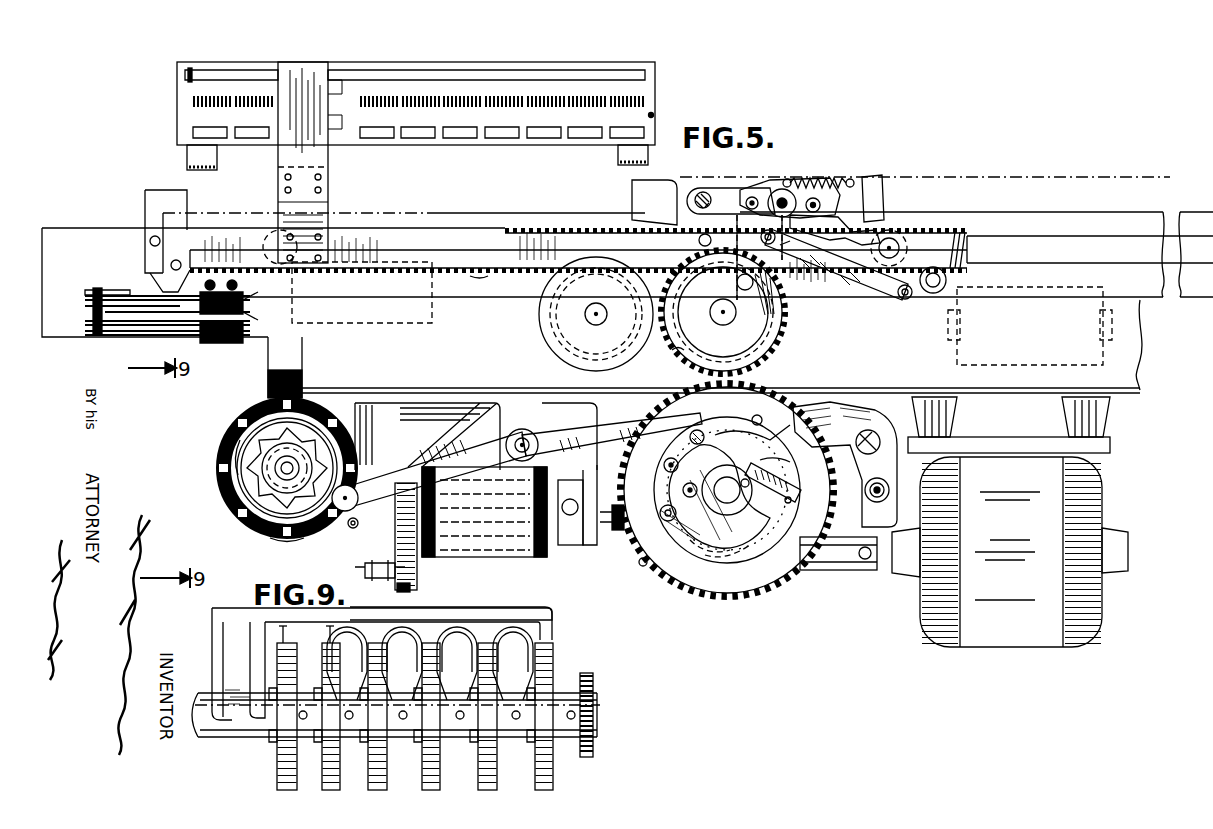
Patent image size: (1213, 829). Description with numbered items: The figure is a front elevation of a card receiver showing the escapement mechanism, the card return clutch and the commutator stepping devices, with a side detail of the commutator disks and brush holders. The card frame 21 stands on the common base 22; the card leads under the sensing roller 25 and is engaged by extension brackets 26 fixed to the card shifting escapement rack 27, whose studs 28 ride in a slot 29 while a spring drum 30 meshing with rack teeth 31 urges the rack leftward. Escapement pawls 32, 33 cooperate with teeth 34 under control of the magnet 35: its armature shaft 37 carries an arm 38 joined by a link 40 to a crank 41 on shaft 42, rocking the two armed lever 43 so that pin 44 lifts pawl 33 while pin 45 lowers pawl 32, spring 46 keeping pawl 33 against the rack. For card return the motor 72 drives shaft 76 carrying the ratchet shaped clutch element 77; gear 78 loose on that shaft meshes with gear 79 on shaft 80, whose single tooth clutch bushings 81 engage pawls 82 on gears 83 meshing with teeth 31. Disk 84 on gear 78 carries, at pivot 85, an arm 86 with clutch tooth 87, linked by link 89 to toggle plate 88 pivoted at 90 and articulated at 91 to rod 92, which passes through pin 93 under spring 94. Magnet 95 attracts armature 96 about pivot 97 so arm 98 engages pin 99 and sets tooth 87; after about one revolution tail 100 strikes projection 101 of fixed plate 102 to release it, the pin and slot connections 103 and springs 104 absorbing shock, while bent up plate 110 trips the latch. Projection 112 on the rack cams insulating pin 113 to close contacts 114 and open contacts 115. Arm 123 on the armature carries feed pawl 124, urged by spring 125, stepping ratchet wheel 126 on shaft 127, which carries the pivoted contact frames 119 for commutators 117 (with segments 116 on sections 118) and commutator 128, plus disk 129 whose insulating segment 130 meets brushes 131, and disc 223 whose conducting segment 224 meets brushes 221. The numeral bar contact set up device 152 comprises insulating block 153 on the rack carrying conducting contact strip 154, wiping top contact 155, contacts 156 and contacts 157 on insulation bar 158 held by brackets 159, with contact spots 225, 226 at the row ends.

In FIG. 5, the card frame 21 is at (1120, 370).
In FIG. 9, the card frame 21 is at (225, 615).
In FIG. 5, the base 22 is at (462, 390).
In FIG. 5, the sensing roller 25 is at (745, 183).
In FIG. 5, the extension brackets 26 is at (160, 198).
In FIG. 5, the card shifting escapement rack 27 is at (578, 251).
In FIG. 5, the studs 28 is at (940, 232).
In FIG. 5, the slot 29 is at (1090, 236).
In FIG. 5, the spring drum 30 is at (570, 335).
In FIG. 5, the rack teeth 31 is at (478, 277).
In FIG. 5, the escapement pawl 32 is at (725, 195).
In FIG. 5, the escapement pawl 33 is at (835, 215).
In FIG. 5, the teeth 34 is at (900, 240).
In FIG. 5, the magnet 35 is at (990, 365).
In FIG. 5, the shaft 37 is at (940, 290).
In FIG. 5, the arm 38 is at (905, 300).
In FIG. 5, the link 40 is at (860, 285).
In FIG. 5, the crank 41 is at (793, 240).
In FIG. 5, the shaft 42 is at (792, 193).
In FIG. 5, the two armed lever 43 is at (800, 182).
In FIG. 5, the pin 44 is at (876, 185).
In FIG. 5, the pin 45 is at (758, 192).
In FIG. 5, the spring 46 is at (818, 200).
In FIG. 5, the motor 72 is at (964, 522).
In FIG. 5, the shaft 76 is at (752, 540).
In FIG. 5, the ratchet shaped clutch element 77 is at (752, 512).
In FIG. 5, the gear 78 is at (752, 595).
In FIG. 5, the gear 79 is at (678, 350).
In FIG. 5, the shaft 80 is at (760, 365).
In FIG. 5, the single tooth clutch bushings 81 is at (770, 348).
In FIG. 5, the pawls 82 is at (738, 283).
In FIG. 5, the gears 83 is at (768, 340).
In FIG. 5, the disk 84 is at (775, 545).
In FIG. 5, the pivot 85 is at (788, 455).
In FIG. 5, the arm 86 is at (664, 460).
In FIG. 5, the clutch tooth 87 is at (683, 486).
In FIG. 5, the toggle plate 88 is at (690, 560).
In FIG. 5, the link 89 is at (660, 510).
In FIG. 5, the pivot 90 is at (640, 565).
In FIG. 5, the articulation 91 is at (795, 470).
In FIG. 5, the rod 92 is at (790, 504).
In FIG. 5, the pin 93 is at (800, 492).
In FIG. 5, the spring 94 is at (752, 490).
In FIG. 5, the magnet 95 is at (484, 512).
In FIG. 5, the armature 96 is at (573, 535).
In FIG. 5, the pivot 97 is at (513, 438).
In FIG. 5, the arm 98 is at (612, 434).
In FIG. 5, the pin 99 is at (698, 430).
In FIG. 5, the tail 100 is at (766, 416).
In FIG. 5, the projection 101 is at (845, 464).
In FIG. 5, the fixed plate 102 is at (890, 482).
In FIG. 5, the pin and slot connections 103 is at (735, 580).
In FIG. 5, the springs 104 is at (705, 565).
In FIG. 5, the bent up plate 110 is at (622, 540).
In FIG. 5, the projection 112 is at (162, 285).
In FIG. 5, the insulating pin 113 is at (97, 290).
In FIG. 5, the contacts 114 is at (90, 300).
In FIG. 5, the contacts 115 is at (108, 333).
In FIG. 5, the contact segment 116 is at (245, 530).
In FIG. 9, the commutator 117 is at (500, 752).
In FIG. 5, the commutator section 118 is at (270, 540).
In FIG. 5, the pivoted contact frame 119 is at (237, 448).
In FIG. 9, the pivoted contact frame 119 is at (565, 675).
In FIG. 5, the arm 123 is at (468, 470).
In FIG. 5, the feed pawl 124 is at (354, 486).
In FIG. 5, the spring 125 is at (360, 522).
In FIG. 5, the ratchet wheel 126 is at (232, 472).
In FIG. 9, the ratchet wheel 126 is at (597, 745).
In FIG. 5, the shaft 127 is at (242, 505).
In FIG. 9, the shaft 127 is at (240, 740).
In FIG. 9, the commutator 128 is at (385, 755).
In FIG. 9, the disk 129 is at (328, 750).
In FIG. 9, the insulating segment 130 is at (328, 655).
In FIG. 9, the brushes 131 is at (328, 638).
In FIG. 5, the numeral bar contact set up device 152 is at (405, 62).
In FIG. 5, the insulating block 153 is at (310, 222).
In FIG. 5, the conducting contact strip 154 is at (294, 68).
In FIG. 5, the top contact 155 is at (627, 74).
In FIG. 5, the contacts 156 is at (648, 100).
In FIG. 5, the contacts 157 is at (640, 130).
In FIG. 5, the insulation bar 158 is at (652, 115).
In FIG. 5, the brackets 159 is at (618, 150).
In FIG. 9, the brushes 221 is at (278, 637).
In FIG. 9, the disc 223 is at (282, 755).
In FIG. 9, the conducting segment 224 is at (283, 665).
In FIG. 5, the contact spot 225 is at (187, 101).
In FIG. 5, the contact spot 226 is at (186, 72).